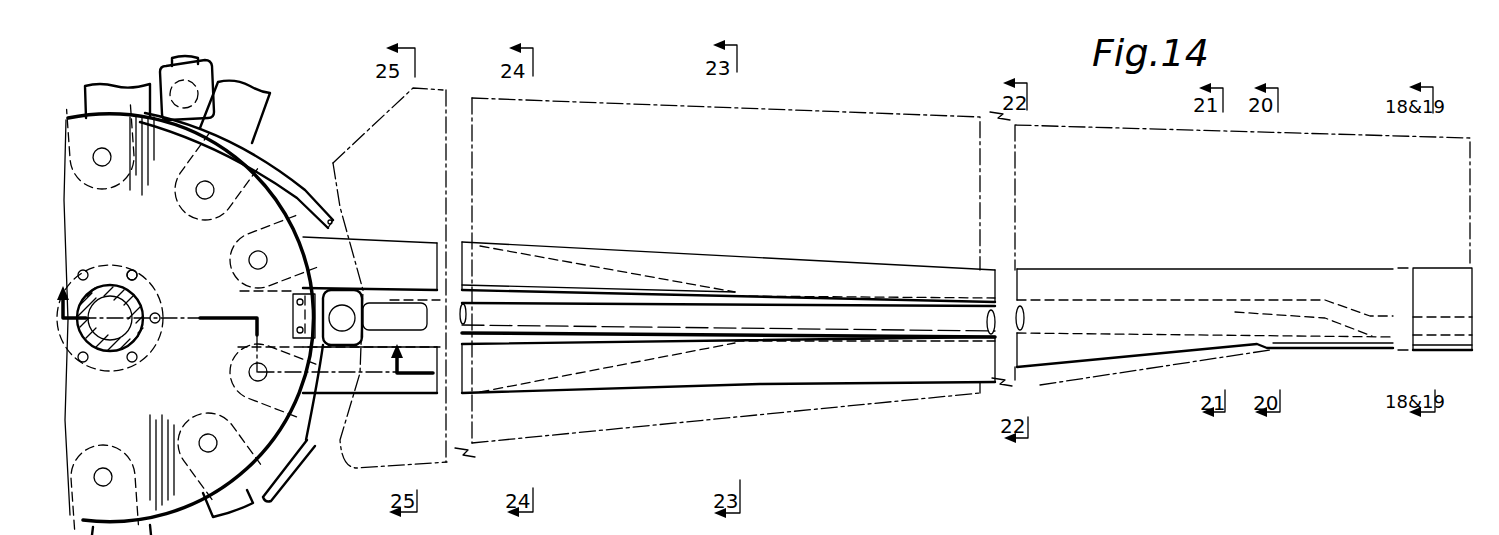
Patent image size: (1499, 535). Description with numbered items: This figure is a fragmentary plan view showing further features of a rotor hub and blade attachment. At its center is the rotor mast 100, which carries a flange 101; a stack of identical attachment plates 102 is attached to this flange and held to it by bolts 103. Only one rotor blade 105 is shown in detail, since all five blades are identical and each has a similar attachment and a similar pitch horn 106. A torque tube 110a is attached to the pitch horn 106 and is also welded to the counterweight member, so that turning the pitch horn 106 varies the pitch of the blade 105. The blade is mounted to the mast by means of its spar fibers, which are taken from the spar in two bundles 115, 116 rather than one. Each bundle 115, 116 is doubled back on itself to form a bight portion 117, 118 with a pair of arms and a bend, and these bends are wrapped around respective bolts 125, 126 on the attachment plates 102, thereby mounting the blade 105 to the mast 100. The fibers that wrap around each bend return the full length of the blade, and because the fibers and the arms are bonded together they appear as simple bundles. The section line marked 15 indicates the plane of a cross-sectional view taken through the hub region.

The rotor mast 100 is at (158, 296).
The flange 101 is at (148, 380).
The attachment plates 102 is at (88, 84).
The bolts 103 is at (131, 270).
The rotor blade 105 is at (1473, 288).
The pitch horn 106 is at (308, 440).
The torque tube 110a is at (380, 288).
The bundle 115 is at (413, 242).
The bundle 116 is at (375, 397).
The bight portion 117 is at (250, 292).
The bight portion 118 is at (238, 394).
The bolt 125 is at (252, 252).
The bolt 126 is at (262, 380).
The section line 15- 15 is at (242, 314).